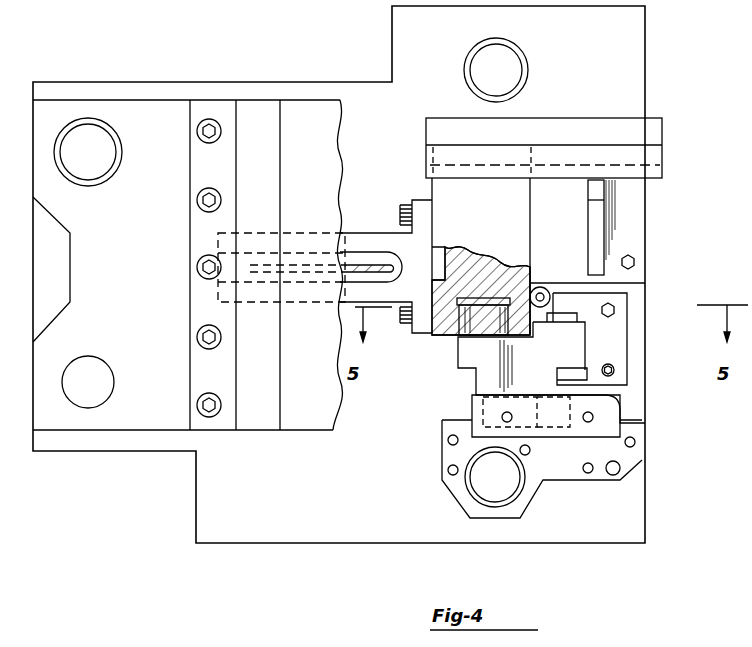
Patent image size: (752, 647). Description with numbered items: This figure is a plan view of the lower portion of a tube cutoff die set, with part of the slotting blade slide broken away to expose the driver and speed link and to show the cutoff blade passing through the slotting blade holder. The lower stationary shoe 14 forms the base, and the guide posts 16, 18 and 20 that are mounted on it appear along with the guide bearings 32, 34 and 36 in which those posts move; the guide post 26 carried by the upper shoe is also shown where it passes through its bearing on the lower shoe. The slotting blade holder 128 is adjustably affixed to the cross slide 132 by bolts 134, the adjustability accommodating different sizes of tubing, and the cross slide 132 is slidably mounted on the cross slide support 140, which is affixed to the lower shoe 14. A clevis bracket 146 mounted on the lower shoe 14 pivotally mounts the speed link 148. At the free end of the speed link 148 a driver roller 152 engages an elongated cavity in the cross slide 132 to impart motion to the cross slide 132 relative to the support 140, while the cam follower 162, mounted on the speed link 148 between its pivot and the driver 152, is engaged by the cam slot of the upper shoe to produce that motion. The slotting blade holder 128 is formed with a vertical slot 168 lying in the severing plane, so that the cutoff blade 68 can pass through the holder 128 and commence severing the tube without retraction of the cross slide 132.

The lower stationary shoe 14 is at (607, 522).
The guide post 16 is at (478, 483).
The guide post 18 is at (510, 76).
The guide post 20 is at (105, 147).
The guide post 26 is at (108, 372).
The guide bearing 32 is at (497, 507).
The guide bearing 34 is at (512, 38).
The guide bearing 36 is at (96, 185).
The cutoff blade 68 is at (350, 262).
The slotting blade holder 128 is at (218, 278).
The cross slide 132 is at (532, 232).
The bolts 134 is at (408, 322).
The cross slide support 140 is at (625, 88).
The clevis bracket 146 is at (560, 320).
The speed link 148 is at (585, 352).
The driver roller 152 is at (453, 322).
The cam follower 162 is at (472, 400).
The vertical slot 168 is at (390, 250).